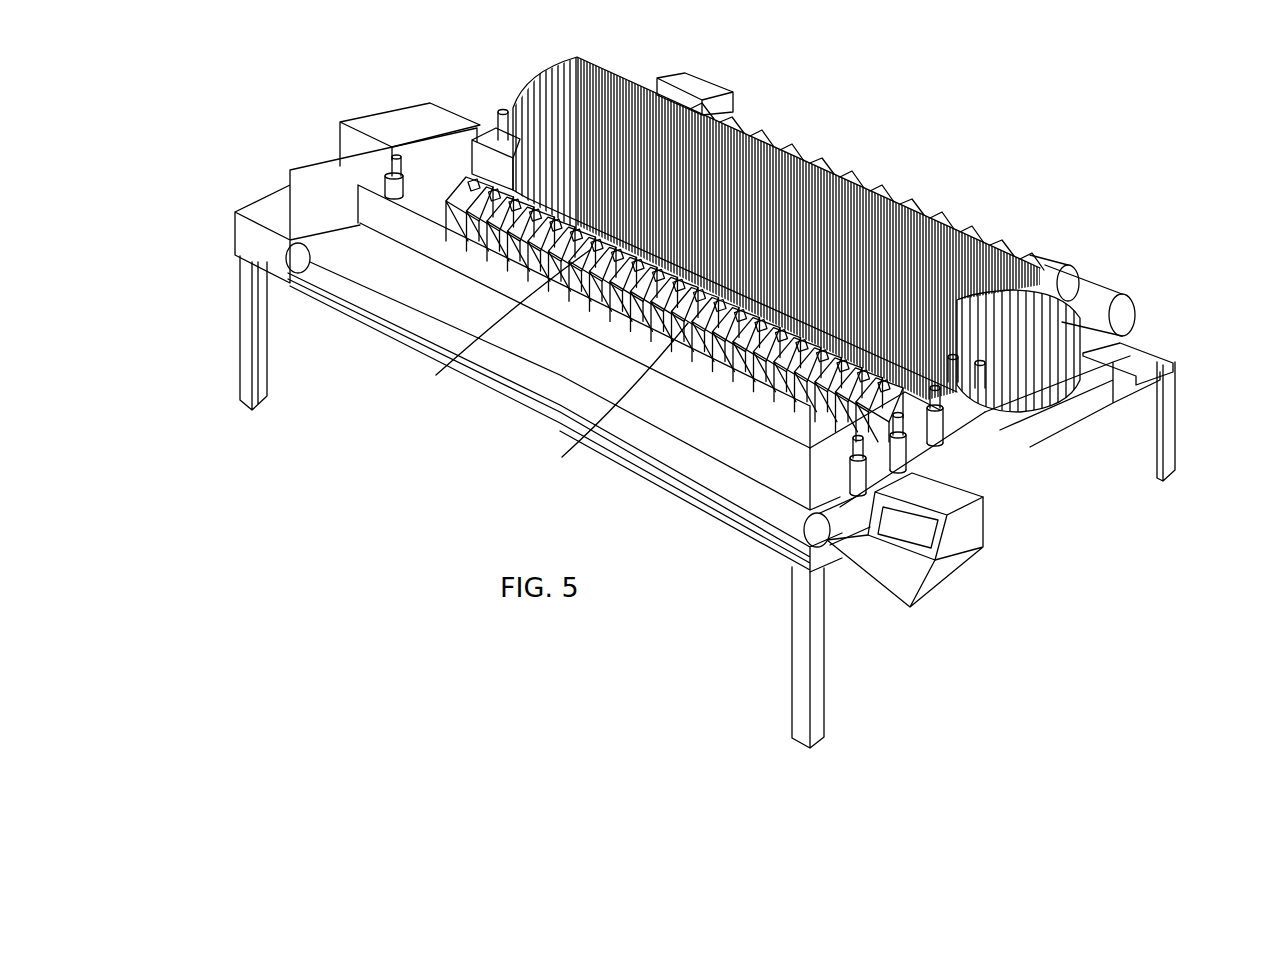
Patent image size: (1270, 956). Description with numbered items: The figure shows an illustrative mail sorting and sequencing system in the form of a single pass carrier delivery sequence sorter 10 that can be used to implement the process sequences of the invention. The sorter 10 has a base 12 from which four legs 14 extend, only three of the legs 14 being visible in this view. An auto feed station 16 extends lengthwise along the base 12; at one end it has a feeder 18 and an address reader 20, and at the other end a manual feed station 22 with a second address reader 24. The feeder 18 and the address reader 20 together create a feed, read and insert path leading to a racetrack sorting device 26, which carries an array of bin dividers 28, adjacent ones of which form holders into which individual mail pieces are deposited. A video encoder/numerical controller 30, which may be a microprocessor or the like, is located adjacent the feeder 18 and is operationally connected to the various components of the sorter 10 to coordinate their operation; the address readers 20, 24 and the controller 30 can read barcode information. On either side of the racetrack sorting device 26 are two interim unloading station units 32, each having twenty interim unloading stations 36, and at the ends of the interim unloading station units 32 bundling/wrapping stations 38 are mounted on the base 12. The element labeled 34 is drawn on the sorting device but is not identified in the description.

The single pass carrier delivery sequence sorter 10 is at (937, 162).
The base 12 is at (750, 530).
The legs 14 is at (247, 352).
The auto feed station 16 is at (568, 378).
The feeder 18 is at (917, 440).
The address reader 20 is at (1027, 428).
The manual feed station 22 is at (270, 207).
The second address reader 24 is at (490, 128).
The racetrack sorting device 26 is at (740, 127).
The bin dividers 28 is at (953, 228).
The video encoder/numerical controller 30 is at (970, 520).
The interim unloading station units 32 is at (611, 398).
The blade 34 is at (875, 183).
The interim unloading stations 36 is at (846, 166).
The bundling/wrapping stations 38 is at (418, 112).